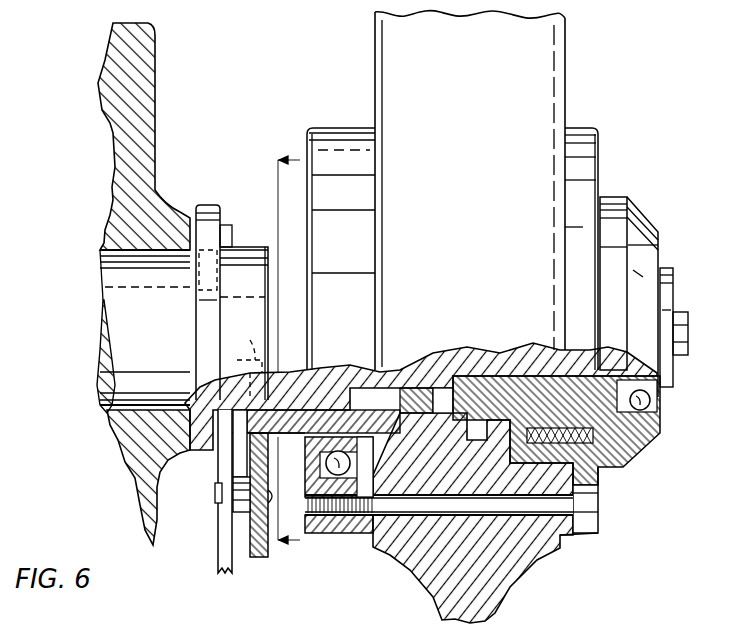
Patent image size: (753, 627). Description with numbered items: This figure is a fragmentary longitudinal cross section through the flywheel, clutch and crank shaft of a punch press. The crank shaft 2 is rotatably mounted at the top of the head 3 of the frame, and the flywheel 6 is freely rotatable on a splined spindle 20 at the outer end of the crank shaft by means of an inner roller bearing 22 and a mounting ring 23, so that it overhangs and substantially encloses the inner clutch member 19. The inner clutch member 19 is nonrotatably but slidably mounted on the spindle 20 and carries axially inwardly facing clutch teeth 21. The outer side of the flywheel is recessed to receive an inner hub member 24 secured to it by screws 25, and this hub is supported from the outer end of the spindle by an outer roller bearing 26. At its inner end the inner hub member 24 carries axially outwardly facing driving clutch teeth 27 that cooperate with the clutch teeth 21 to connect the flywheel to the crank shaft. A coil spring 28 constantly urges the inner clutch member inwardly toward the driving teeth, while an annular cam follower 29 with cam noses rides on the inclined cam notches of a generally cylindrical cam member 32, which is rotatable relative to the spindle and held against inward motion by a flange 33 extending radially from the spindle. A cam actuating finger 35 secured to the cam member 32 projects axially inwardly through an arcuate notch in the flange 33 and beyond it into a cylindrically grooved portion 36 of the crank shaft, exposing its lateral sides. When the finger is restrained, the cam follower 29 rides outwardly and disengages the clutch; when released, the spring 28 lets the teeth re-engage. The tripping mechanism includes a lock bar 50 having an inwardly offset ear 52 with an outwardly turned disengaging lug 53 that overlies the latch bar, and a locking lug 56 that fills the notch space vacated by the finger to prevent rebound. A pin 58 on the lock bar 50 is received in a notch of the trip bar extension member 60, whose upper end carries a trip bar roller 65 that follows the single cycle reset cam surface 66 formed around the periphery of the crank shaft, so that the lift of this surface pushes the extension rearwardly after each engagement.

The crank shaft 2 is at (115, 314).
The head 3 is at (140, 130).
The flywheel 6 is at (392, 72).
The inner clutch member 19 is at (652, 427).
The splined spindle 20 is at (443, 390).
The clutch teeth 21 is at (598, 473).
The inner roller bearing 22 is at (336, 525).
The mounting ring 23 is at (360, 533).
The inner hub member 24 is at (580, 540).
The screws 25 is at (598, 517).
The outer roller bearing 26 is at (660, 403).
The driving clutch teeth 27 is at (500, 418).
The coil spring 28 is at (627, 462).
The annular cam follower 29 is at (480, 385).
The cam member 32 is at (422, 397).
The flange 33 is at (292, 243).
The cam actuating finger 35 is at (323, 407).
The cylindrically grooved portion 36 is at (251, 247).
The lock bar 50 is at (257, 557).
The ear 52 is at (243, 448).
The disengaging lug 53 is at (246, 357).
The locking lug 56 is at (284, 437).
The pin 58 is at (218, 497).
The trip bar extension member 60 is at (218, 538).
The trip bar roller 65 is at (204, 206).
The single cycle reset cam surface 66 is at (198, 323).